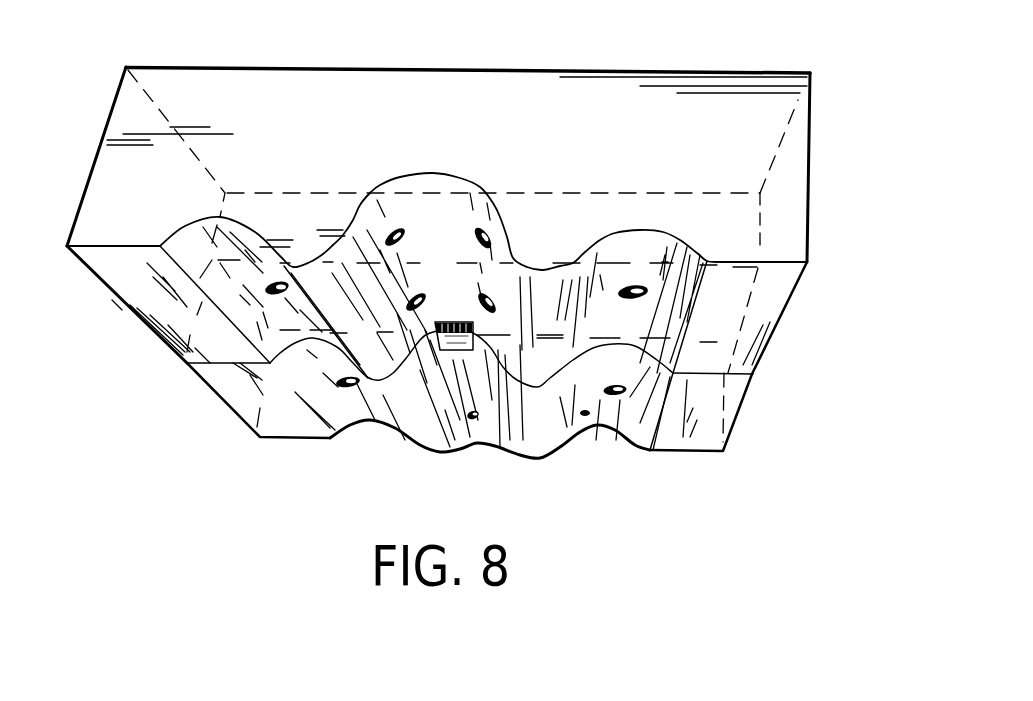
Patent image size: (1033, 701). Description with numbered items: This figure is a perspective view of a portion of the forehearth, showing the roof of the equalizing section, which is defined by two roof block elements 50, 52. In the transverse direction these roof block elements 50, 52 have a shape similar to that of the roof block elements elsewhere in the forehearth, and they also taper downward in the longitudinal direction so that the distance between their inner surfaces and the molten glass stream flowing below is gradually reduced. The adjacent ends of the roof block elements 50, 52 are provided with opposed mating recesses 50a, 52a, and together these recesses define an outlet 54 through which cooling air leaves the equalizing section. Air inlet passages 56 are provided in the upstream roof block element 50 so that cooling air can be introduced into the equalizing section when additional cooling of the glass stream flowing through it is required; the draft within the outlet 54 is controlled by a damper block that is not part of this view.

The roof block element 50 is at (765, 355).
The mating recess 50a is at (450, 322).
The roof block element 52 is at (745, 407).
The mating recess 52a is at (500, 447).
The outlet 54 is at (445, 349).
The air inlet passages 56 is at (394, 226).